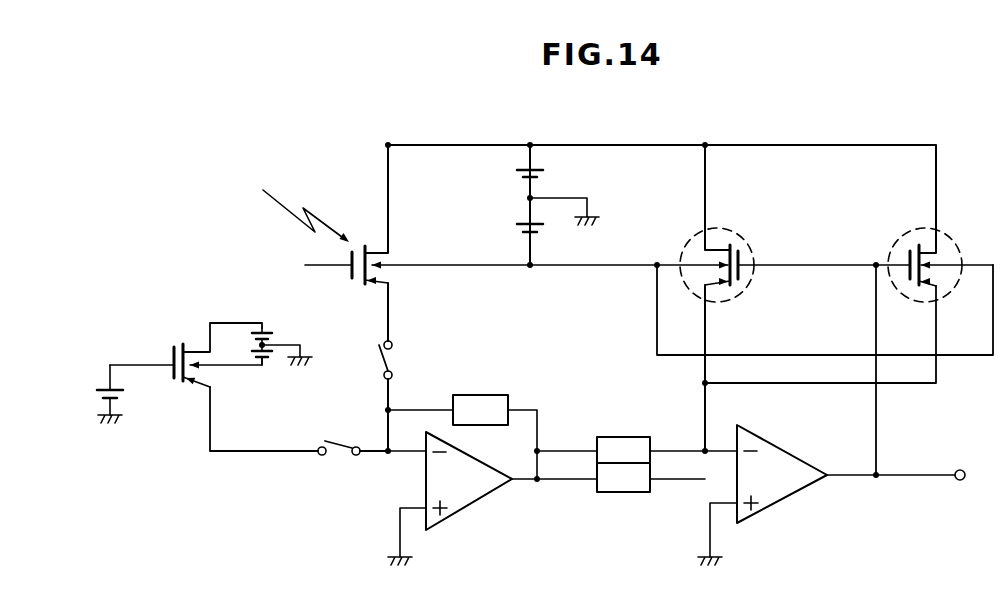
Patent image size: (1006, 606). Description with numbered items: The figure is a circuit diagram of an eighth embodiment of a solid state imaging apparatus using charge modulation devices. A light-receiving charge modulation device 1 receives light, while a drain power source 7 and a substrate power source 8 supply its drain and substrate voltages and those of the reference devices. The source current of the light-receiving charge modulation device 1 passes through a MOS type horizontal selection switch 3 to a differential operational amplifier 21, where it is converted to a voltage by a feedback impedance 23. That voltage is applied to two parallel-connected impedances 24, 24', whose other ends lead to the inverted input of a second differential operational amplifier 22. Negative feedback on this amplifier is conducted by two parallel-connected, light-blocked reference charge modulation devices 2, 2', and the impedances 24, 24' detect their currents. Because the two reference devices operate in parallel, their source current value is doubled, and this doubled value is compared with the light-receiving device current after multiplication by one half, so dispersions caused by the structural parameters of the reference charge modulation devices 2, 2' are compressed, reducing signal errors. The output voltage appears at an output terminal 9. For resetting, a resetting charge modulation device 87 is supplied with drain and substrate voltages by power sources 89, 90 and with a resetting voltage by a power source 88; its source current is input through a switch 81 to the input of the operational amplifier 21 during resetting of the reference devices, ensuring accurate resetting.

The light-receiving charge modulation device 1 is at (358, 288).
The reference charge modulation device 2 is at (732, 272).
The reference charge modulation device 2' is at (943, 259).
The horizontal selection switch 3 is at (395, 362).
The drain power source 7 is at (545, 173).
The substrate power source 8 is at (517, 227).
The output terminal 9 is at (960, 481).
The differential operational amplifier 21 is at (483, 497).
The differential operational amplifier 22 is at (795, 493).
The feedback impedance 23 is at (485, 395).
The impedance 24 is at (623, 425).
The impedance 24' is at (623, 502).
The switch 81 is at (335, 456).
The resetting charge modulation device 87 is at (178, 386).
The power source 88 is at (95, 392).
The drain power source 89 is at (274, 334).
The substrate power source 90 is at (275, 358).